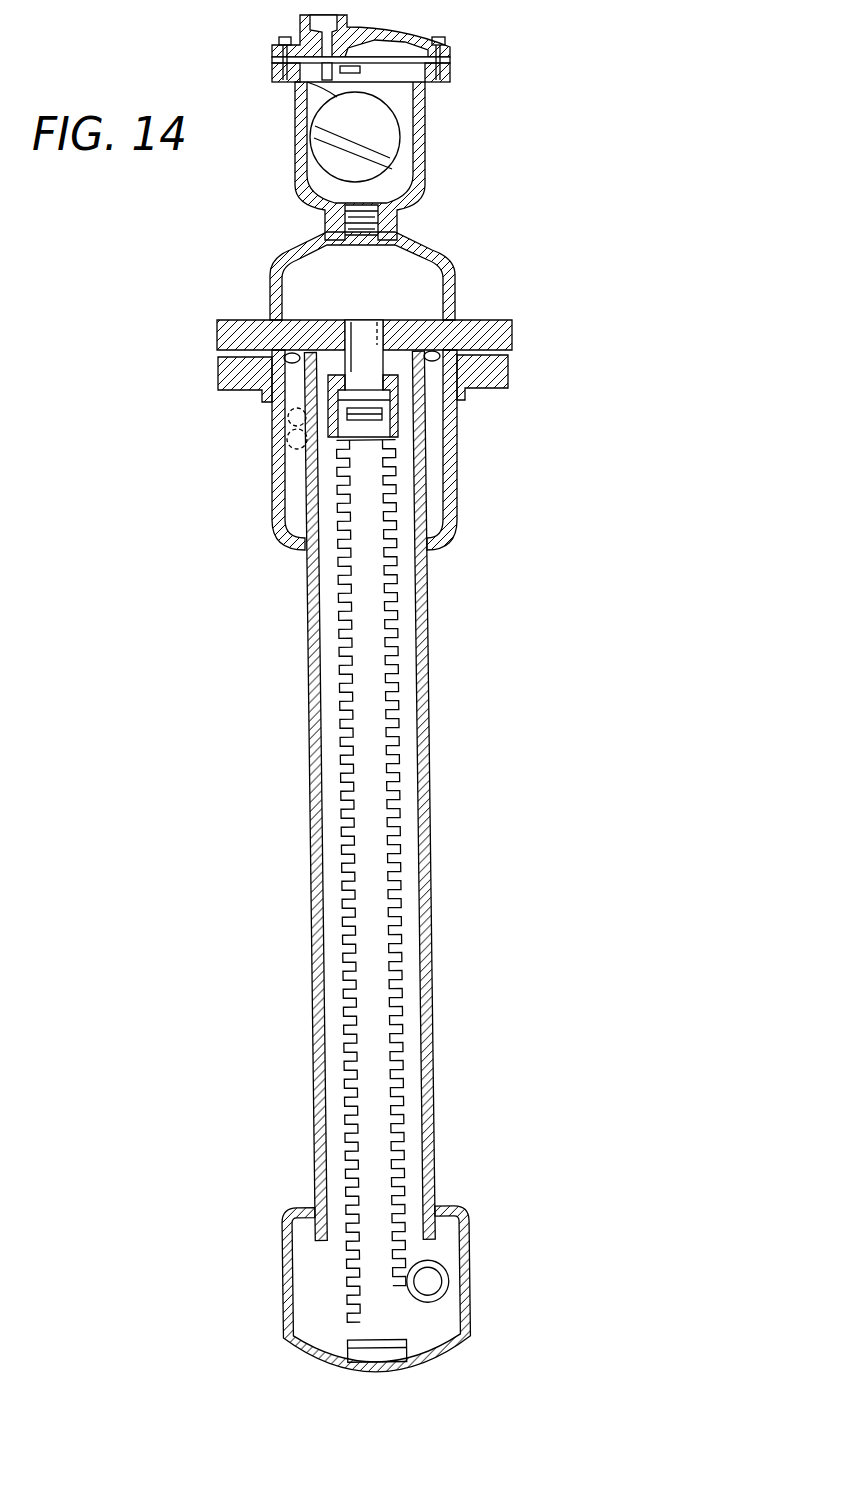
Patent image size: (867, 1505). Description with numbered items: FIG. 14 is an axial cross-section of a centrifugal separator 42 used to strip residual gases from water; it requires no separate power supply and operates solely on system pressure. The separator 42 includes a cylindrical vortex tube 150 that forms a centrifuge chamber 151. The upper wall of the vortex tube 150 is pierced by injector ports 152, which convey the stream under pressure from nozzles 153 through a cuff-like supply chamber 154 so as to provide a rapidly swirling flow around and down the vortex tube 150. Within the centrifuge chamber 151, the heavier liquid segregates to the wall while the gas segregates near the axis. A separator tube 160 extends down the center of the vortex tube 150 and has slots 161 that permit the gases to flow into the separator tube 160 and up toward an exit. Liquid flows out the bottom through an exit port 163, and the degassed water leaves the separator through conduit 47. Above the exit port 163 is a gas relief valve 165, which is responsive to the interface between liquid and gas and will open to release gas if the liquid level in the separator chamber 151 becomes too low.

The separator 42 is at (480, 750).
The conduit 47 is at (442, 1288).
The vortex tube 150 is at (412, 928).
The centrifuge chamber 151 is at (407, 853).
The injector ports 152 is at (305, 432).
The nozzles 153 is at (300, 412).
The supply chamber 154 is at (435, 450).
The separator tube 160 is at (431, 900).
The slots 161 is at (388, 604).
The exit port 163 is at (373, 332).
The gas relief valve 165 is at (388, 110).